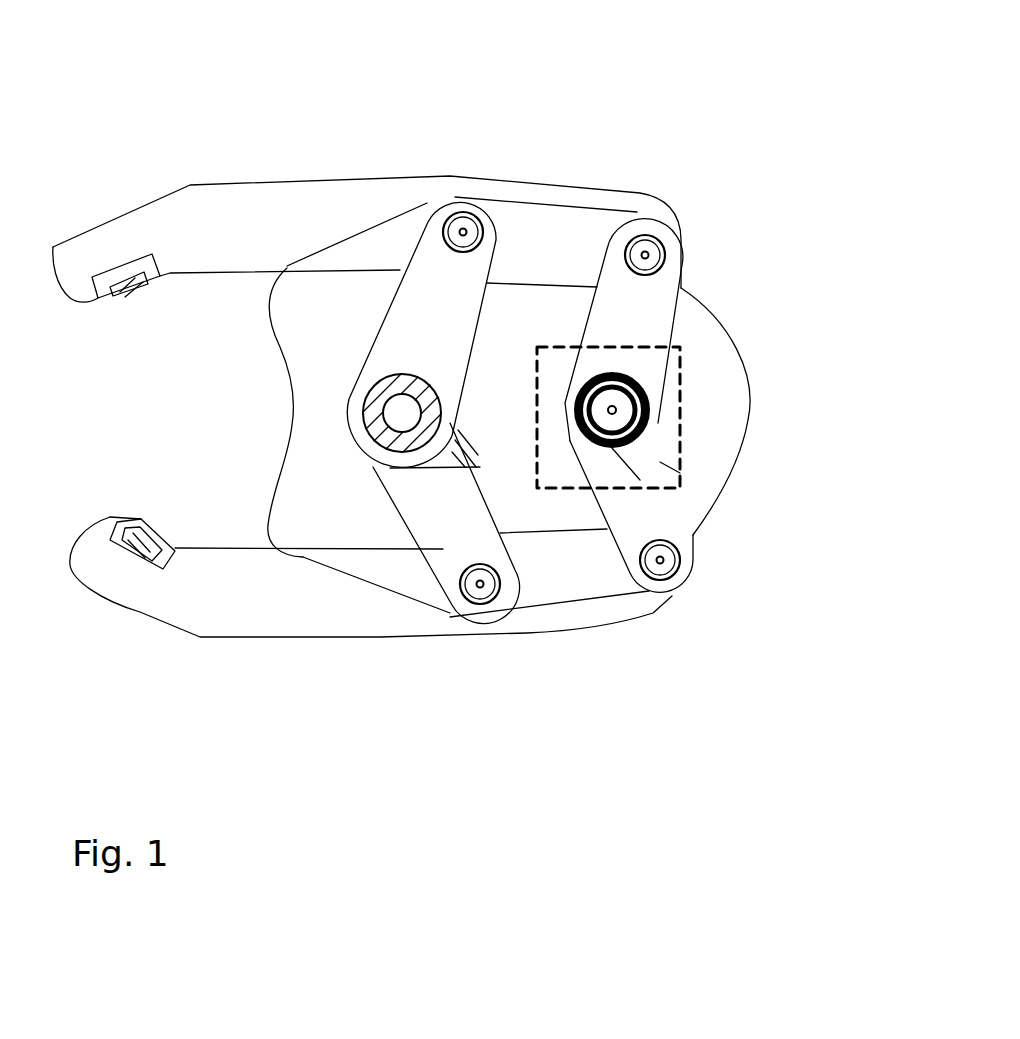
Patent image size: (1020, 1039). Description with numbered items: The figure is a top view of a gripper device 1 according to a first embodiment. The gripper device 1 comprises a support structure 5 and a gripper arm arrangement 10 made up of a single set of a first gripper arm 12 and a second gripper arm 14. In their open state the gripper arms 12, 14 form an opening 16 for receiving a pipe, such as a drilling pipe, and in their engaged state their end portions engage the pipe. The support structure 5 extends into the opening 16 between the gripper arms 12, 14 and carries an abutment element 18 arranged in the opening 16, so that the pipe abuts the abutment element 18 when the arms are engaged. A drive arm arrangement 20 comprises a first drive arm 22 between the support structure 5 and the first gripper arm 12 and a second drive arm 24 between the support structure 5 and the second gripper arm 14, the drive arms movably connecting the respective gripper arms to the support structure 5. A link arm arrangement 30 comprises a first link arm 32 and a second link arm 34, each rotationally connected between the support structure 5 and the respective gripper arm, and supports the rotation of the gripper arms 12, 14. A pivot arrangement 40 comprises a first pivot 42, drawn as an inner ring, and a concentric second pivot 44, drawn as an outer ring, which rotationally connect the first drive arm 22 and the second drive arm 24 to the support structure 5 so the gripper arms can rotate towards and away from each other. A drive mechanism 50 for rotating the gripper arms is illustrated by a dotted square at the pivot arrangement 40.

The gripper device 1 is at (736, 67).
The support structure 5 is at (693, 488).
The gripper arm arrangement 10 is at (697, 194).
The first gripper arm 12 is at (513, 193).
The second gripper arm 14 is at (553, 620).
The opening 16 is at (197, 403).
The abutment element 18 is at (287, 377).
The drive arm arrangement 20 is at (720, 294).
The first drive arm 22 is at (643, 323).
The second drive arm 24 is at (660, 515).
The link arm arrangement 30 is at (483, 102).
The first link arm 32 is at (433, 287).
The second link arm 34 is at (442, 547).
The pivot arrangement 40 is at (726, 386).
The first pivot 42 is at (648, 415).
The second pivot 44 is at (647, 393).
The drive mechanism 50 is at (660, 462).